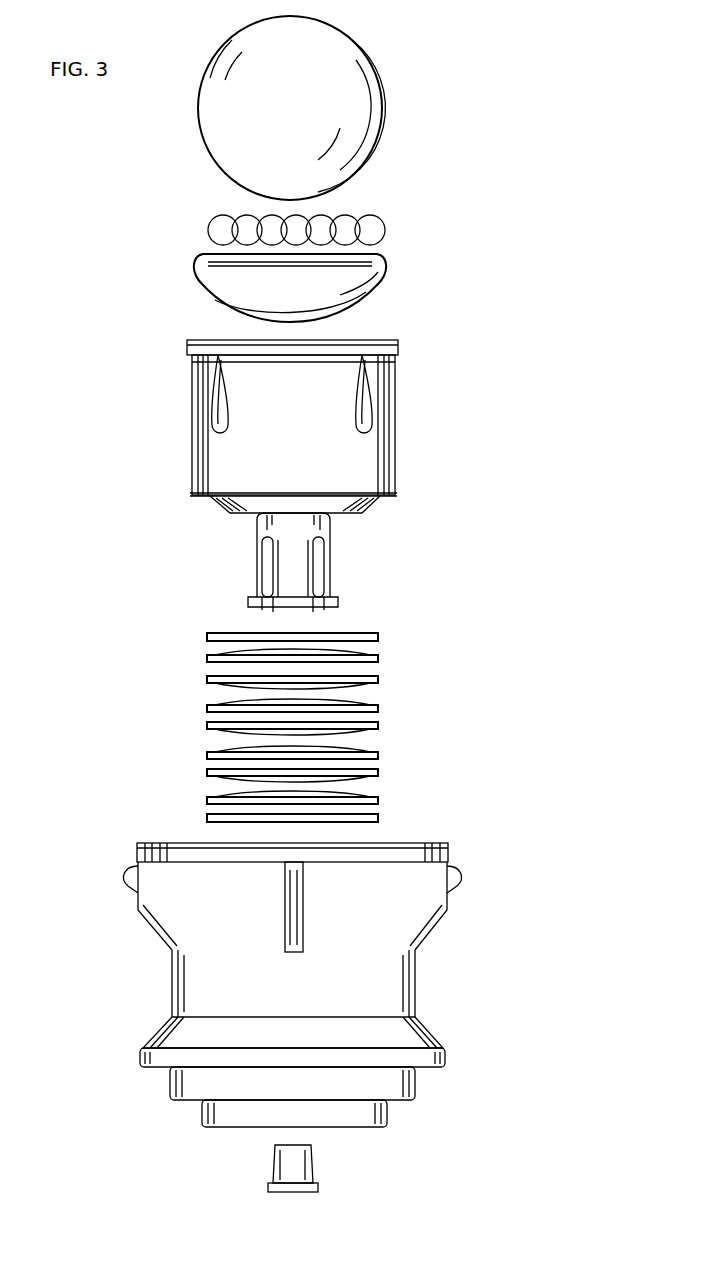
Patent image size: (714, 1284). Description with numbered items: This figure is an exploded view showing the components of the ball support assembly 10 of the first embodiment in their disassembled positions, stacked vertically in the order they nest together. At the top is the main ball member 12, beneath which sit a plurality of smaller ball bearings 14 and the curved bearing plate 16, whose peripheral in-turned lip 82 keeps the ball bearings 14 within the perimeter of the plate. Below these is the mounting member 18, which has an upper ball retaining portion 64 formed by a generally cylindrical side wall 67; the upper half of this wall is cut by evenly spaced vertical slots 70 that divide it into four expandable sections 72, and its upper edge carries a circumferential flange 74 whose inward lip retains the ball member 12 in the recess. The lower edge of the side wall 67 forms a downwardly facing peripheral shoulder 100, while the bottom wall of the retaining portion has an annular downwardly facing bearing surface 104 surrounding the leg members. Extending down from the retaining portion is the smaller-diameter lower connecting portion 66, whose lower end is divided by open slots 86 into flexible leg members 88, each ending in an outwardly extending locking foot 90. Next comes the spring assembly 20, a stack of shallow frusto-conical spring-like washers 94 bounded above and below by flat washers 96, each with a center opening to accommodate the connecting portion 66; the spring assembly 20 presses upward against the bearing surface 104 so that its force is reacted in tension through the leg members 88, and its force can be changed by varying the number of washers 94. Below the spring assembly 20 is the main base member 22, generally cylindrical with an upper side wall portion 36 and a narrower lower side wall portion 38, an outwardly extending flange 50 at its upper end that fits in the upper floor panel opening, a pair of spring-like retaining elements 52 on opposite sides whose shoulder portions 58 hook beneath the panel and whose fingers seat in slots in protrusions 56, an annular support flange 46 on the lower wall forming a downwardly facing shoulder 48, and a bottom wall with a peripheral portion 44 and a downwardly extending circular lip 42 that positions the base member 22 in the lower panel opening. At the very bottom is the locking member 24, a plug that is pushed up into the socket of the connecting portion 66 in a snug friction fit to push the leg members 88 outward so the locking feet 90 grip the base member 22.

The ball support assembly 10 is at (138, 168).
The main ball member 12 is at (385, 90).
The ball bearings 14 is at (392, 230).
The bearing plate 16 is at (386, 283).
The mounting member 18 is at (294, 471).
The spring assembly 20 is at (348, 727).
The main base member 22 is at (287, 978).
The locking member 24 is at (320, 1171).
The upper side wall portion 36 is at (418, 965).
The lower side wall portion 38 is at (428, 1040).
The circular lip 42 is at (386, 1125).
The peripheral portion 44 is at (400, 1101).
The annular support flange 46 is at (447, 1058).
The downwardly facing shoulder 48 is at (418, 1075).
The outwardly extending flange 50 is at (420, 845).
The spring-like retaining elements 52 is at (124, 877).
The protrusion 56 is at (158, 922).
The shoulder portion 58 is at (136, 849).
The upper ball retaining portion 64 is at (188, 468).
The lower connecting portion 66 is at (300, 576).
The cylindrical side wall 67 is at (394, 418).
The vertical slots 70 is at (220, 410).
The expandable sections 72 is at (197, 366).
The circumferential flange 74 is at (393, 343).
The peripheral in-turned lip 82 is at (378, 264).
The open slots 86 is at (265, 572).
The leg members 88 is at (281, 558).
The locking foot 90 is at (260, 609).
The spring-like washers 94 is at (378, 776).
The flat washers 96 is at (379, 638).
The downwardly facing peripheral shoulder 100 is at (380, 498).
The bearing surface 104 is at (236, 515).